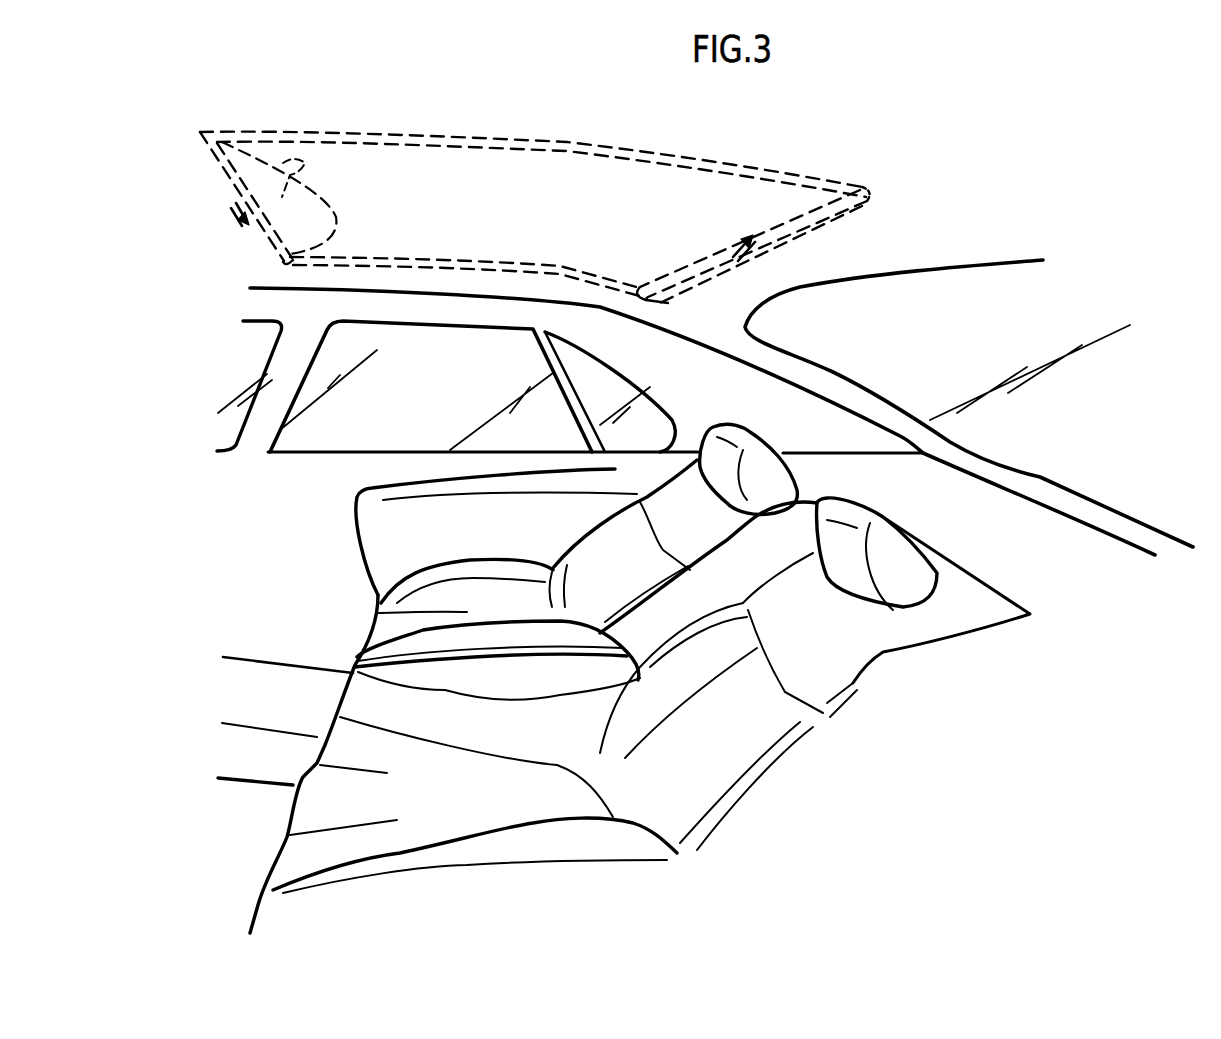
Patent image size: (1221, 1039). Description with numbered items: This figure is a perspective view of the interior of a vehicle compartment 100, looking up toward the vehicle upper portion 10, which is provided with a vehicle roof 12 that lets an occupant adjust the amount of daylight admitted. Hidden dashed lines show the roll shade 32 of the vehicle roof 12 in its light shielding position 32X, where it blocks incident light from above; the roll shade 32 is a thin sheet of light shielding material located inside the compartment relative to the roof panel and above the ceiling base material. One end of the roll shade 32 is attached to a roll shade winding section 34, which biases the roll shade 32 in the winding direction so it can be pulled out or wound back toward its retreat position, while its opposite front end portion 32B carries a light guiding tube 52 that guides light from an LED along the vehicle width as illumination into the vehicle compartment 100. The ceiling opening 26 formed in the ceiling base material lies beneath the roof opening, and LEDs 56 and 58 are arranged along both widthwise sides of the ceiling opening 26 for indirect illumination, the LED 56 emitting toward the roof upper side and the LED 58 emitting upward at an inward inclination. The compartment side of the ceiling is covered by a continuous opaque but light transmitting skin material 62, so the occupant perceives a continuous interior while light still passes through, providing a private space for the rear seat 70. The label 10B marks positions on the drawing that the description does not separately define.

The vehicle upper portion 10 is at (418, 287).
The side portion of vehicle body 10B is at (234, 205).
The vehicle roof 12 is at (445, 289).
The ceiling opening 26 is at (279, 198).
The roll shade 32 is at (535, 177).
The light shielding position 32X is at (433, 177).
The front end portion 32B is at (267, 236).
The roll shade winding section 34 is at (837, 212).
The light guiding tube 52 is at (270, 240).
The LED 56 is at (567, 141).
The LED 58 is at (567, 140).
The skin material 62 is at (793, 268).
The rear seat 70 is at (575, 548).
The vehicle compartment 100 is at (307, 531).